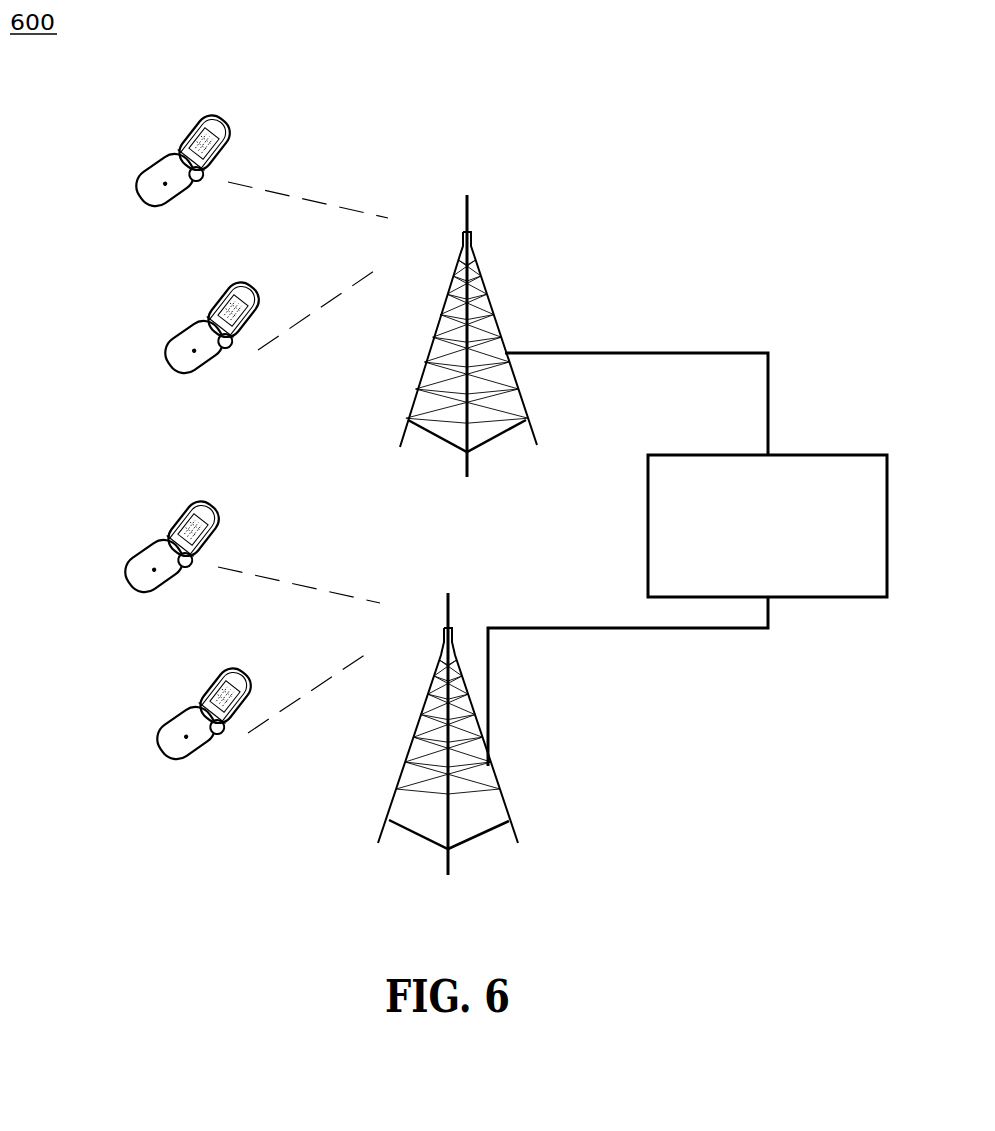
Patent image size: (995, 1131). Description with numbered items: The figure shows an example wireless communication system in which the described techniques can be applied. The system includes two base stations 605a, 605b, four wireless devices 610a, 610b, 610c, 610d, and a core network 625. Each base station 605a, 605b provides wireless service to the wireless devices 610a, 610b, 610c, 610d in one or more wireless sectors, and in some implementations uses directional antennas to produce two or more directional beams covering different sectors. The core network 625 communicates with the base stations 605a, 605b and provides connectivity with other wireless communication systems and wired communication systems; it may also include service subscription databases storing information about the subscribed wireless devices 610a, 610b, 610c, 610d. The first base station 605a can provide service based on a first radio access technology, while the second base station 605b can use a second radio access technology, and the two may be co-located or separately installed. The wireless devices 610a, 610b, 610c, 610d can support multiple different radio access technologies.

The base station 605a is at (480, 290).
The base station 605b is at (455, 637).
The wireless device 610a is at (184, 127).
The wireless device 610b is at (214, 292).
The wireless device 610c is at (294, 498).
The wireless device 610d is at (206, 678).
The core network 625 is at (671, 456).